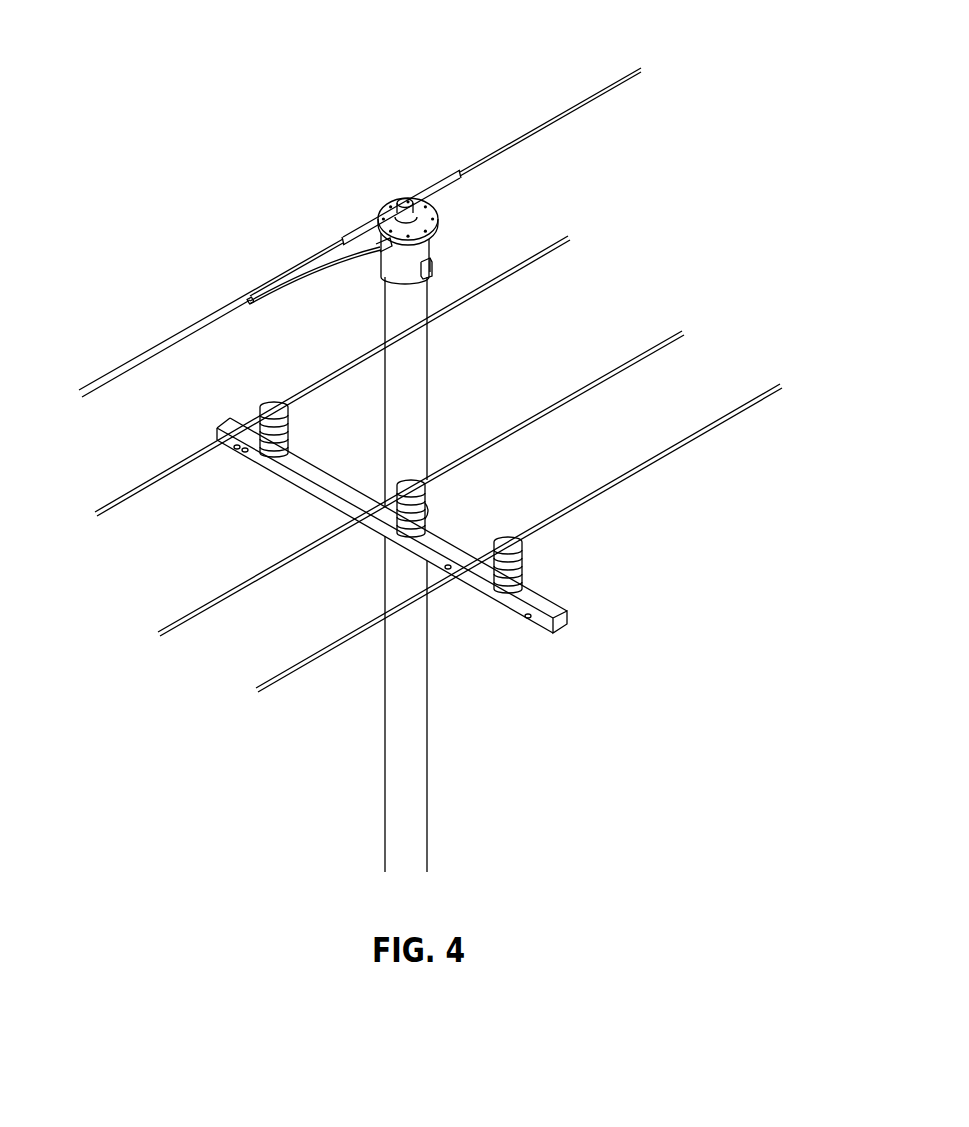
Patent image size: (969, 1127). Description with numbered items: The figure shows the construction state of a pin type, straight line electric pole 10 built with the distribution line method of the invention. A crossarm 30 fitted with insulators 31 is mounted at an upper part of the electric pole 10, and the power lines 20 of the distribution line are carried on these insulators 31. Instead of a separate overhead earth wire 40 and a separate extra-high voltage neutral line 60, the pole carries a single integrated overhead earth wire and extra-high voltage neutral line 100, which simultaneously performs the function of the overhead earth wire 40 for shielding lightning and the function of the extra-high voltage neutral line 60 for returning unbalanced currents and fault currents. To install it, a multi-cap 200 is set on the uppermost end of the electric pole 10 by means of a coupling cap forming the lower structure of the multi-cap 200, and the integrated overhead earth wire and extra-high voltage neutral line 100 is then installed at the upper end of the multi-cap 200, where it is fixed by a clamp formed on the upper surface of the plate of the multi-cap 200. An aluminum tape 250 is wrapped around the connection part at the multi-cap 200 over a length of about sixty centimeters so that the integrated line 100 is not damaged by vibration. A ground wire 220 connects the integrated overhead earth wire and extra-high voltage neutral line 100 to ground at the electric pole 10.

The electric pole 10 is at (408, 768).
The power line 20 is at (707, 425).
The crossarm 30 is at (568, 625).
The insulator 31 is at (518, 558).
The overhead earth wire 40 is at (401, 207).
The extra-high voltage neutral line 60 is at (401, 207).
The integrated overhead earth wire and extra-high voltage neutral line 100 is at (360, 202).
The multi-cap 200 is at (408, 253).
The ground wire 220 is at (332, 260).
The aluminum tape 250 is at (448, 182).